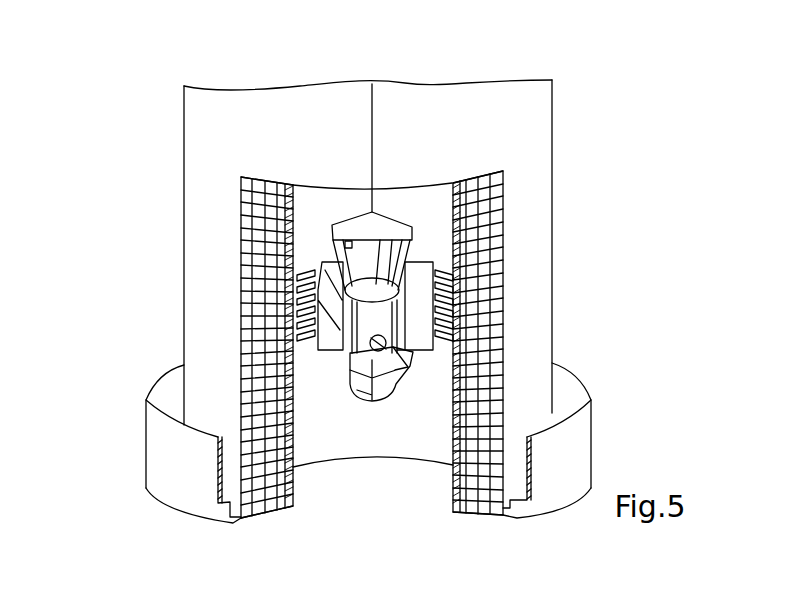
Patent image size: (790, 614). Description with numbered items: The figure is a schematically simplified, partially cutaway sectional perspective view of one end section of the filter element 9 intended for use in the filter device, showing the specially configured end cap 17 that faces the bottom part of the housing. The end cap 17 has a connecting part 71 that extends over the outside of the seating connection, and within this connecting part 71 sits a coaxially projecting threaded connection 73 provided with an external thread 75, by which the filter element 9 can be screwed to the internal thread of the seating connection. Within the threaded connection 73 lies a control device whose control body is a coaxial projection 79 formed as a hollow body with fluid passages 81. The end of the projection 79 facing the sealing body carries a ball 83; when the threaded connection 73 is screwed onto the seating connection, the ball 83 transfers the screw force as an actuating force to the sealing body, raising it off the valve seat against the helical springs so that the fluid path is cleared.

The filter element 9 is at (552, 80).
The end cap 17 is at (575, 432).
The connecting part 71 is at (293, 412).
The threaded connection 73 is at (300, 290).
The external thread 75 is at (503, 302).
The projection 79 is at (393, 290).
The fluid passages 81 is at (407, 363).
The ball 83 is at (357, 400).